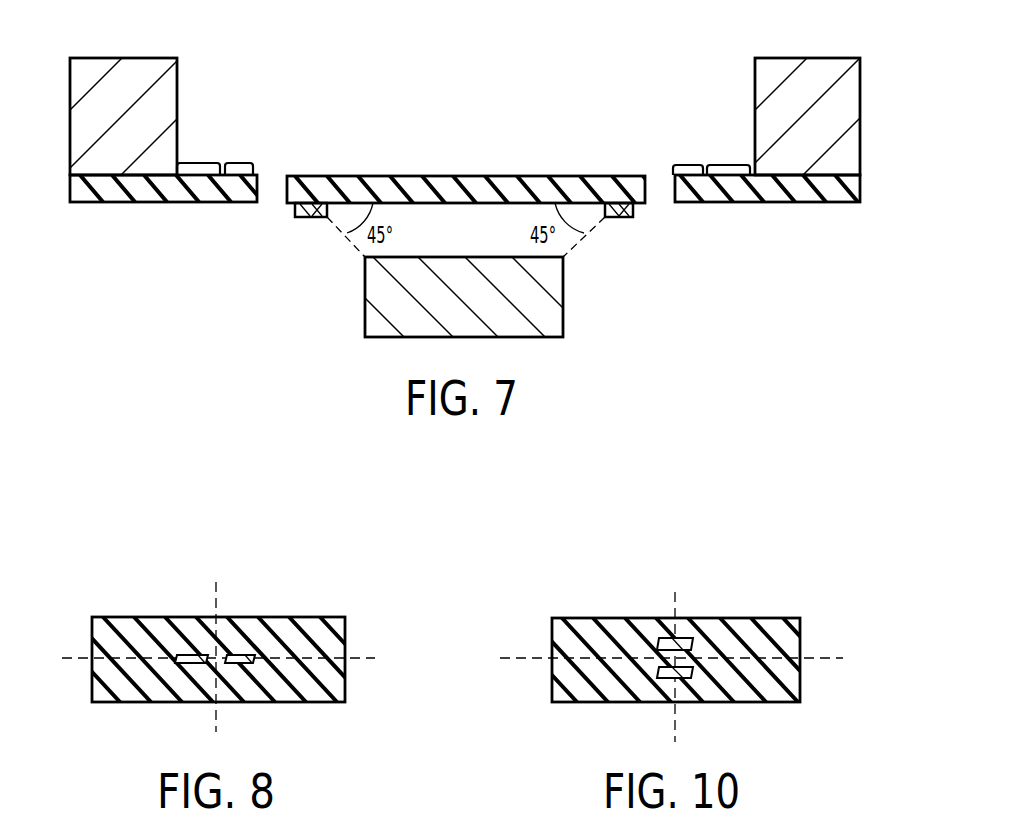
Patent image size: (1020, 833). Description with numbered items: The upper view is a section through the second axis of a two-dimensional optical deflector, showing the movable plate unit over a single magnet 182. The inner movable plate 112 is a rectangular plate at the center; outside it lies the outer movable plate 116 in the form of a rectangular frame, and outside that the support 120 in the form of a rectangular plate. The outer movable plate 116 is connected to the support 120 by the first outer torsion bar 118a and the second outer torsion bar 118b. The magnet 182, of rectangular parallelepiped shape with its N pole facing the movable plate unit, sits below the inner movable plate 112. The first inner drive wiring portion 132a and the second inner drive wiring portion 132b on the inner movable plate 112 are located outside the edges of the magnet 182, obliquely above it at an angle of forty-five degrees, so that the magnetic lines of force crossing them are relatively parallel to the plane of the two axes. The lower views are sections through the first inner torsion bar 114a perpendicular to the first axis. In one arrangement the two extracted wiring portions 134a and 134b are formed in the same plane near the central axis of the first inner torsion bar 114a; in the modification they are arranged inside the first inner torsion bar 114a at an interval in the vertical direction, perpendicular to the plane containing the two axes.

In FIG. 7, the inner movable plate 112 is at (452, 177).
In FIG. 7, the outer movable plate 116 is at (242, 163).
In FIG. 7, the first outer torsion bar 118a is at (729, 163).
In FIG. 7, the second outer torsion bar 118b is at (198, 163).
In FIG. 7, the support 120 is at (128, 72).
In FIG. 7, the first inner drive wiring portion 132a is at (628, 218).
In FIG. 7, the second inner drive wiring portion 132b is at (307, 220).
In FIG. 7, the magnet 182 is at (547, 312).
In FIG. 8, the first inner torsion bar 114a is at (300, 633).
In FIG. 10, the first inner torsion bar 114a is at (800, 640).
In FIG. 8, the first inner extracted wiring portion 134a is at (188, 650).
In FIG. 10, the first inner extracted wiring portion 134a is at (670, 632).
In FIG. 8, the second inner extracted wiring portion 134b is at (243, 650).
In FIG. 10, the second inner extracted wiring portion 134b is at (697, 672).